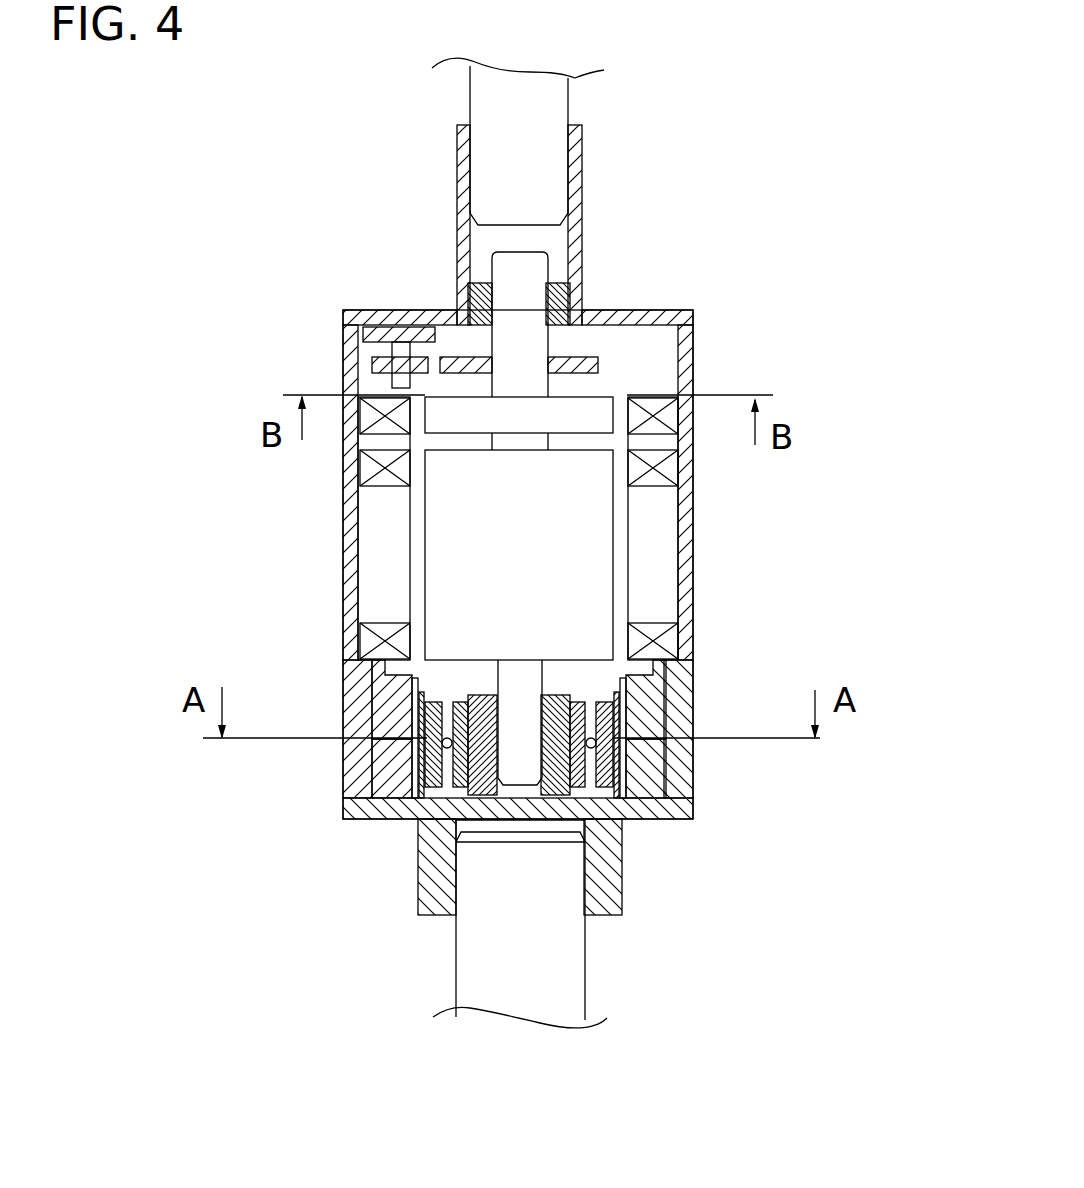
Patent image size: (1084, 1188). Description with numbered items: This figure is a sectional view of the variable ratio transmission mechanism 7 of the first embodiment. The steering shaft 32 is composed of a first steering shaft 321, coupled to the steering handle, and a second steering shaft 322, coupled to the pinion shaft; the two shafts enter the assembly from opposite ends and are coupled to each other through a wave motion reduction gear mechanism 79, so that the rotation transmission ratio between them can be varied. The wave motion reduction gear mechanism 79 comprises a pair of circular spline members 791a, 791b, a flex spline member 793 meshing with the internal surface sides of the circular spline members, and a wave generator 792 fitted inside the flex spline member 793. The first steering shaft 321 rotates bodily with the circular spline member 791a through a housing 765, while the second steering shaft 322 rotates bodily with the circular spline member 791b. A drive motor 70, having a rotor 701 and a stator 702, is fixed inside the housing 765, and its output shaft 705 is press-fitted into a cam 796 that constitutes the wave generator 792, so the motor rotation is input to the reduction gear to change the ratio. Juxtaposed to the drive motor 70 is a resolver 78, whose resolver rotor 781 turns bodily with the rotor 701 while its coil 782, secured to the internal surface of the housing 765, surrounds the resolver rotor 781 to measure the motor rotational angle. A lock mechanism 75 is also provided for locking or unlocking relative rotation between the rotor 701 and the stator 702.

The variable ratio transmission mechanism 7 is at (710, 192).
The steering shaft 32 is at (571, 118).
The first steering shaft 321 is at (517, 173).
The second steering shaft 322 is at (525, 968).
The drive motor 70 is at (355, 510).
The rotor 701 is at (450, 570).
The stator 702 is at (653, 547).
The output shaft 705 is at (488, 747).
The lock mechanism 75 is at (349, 360).
The housing 765 is at (355, 600).
The resolver 78 is at (681, 427).
The resolver rotor 781 is at (458, 415).
The coil 782 is at (655, 407).
The wave motion reduction gear mechanism 79 is at (366, 767).
The circular spline member 791a is at (650, 698).
The circular spline member 791b is at (647, 773).
The wave generator 792 is at (418, 777).
The flex spline member 793 is at (623, 777).
The cam 796 is at (583, 762).